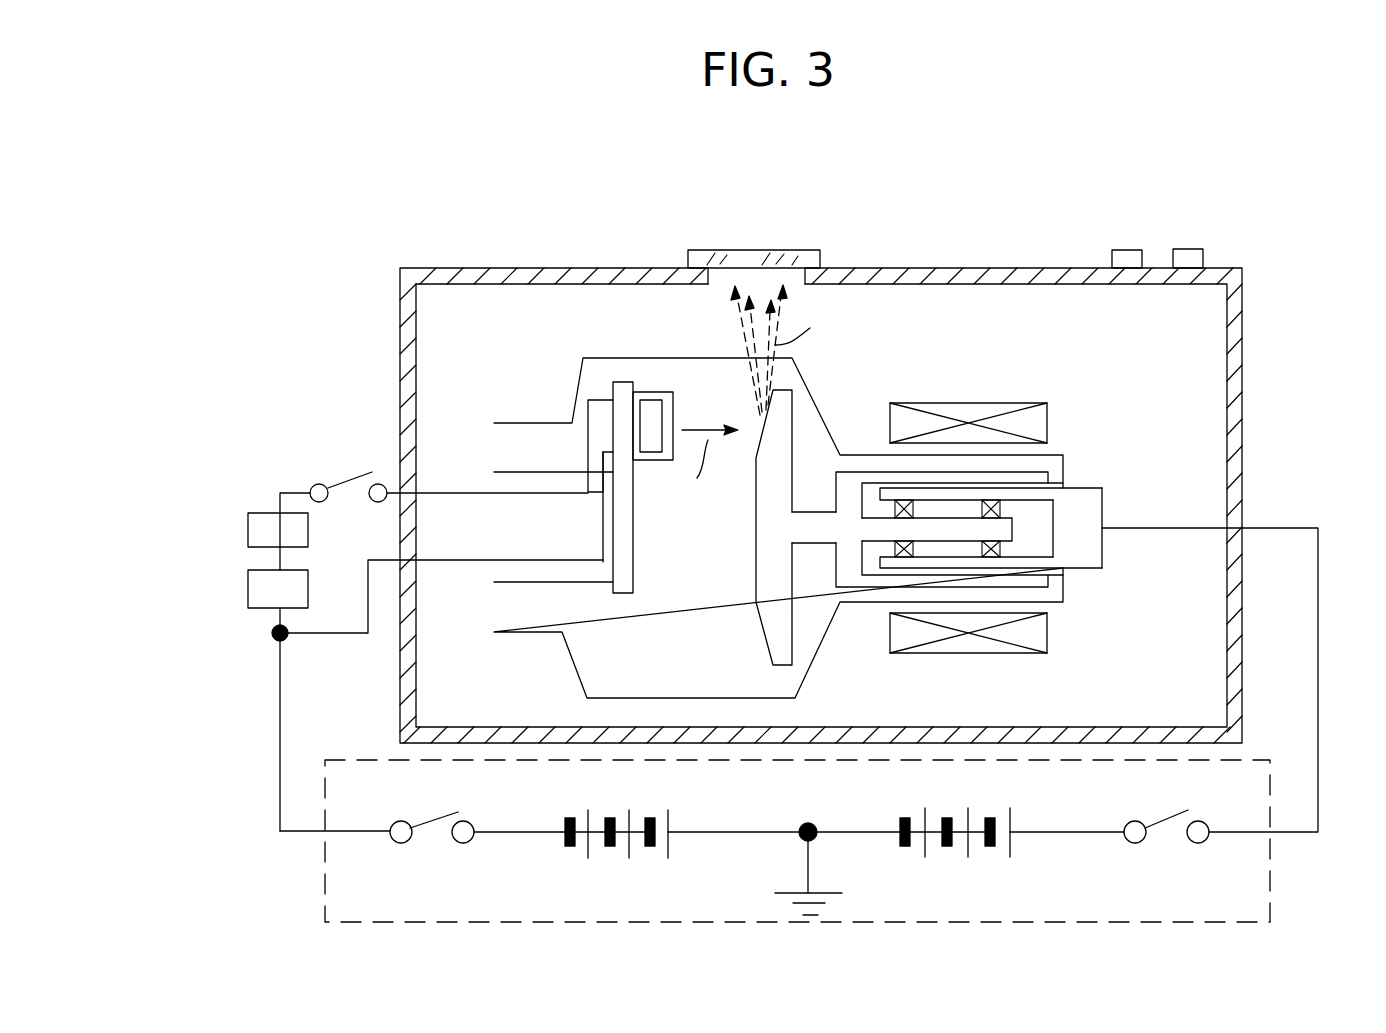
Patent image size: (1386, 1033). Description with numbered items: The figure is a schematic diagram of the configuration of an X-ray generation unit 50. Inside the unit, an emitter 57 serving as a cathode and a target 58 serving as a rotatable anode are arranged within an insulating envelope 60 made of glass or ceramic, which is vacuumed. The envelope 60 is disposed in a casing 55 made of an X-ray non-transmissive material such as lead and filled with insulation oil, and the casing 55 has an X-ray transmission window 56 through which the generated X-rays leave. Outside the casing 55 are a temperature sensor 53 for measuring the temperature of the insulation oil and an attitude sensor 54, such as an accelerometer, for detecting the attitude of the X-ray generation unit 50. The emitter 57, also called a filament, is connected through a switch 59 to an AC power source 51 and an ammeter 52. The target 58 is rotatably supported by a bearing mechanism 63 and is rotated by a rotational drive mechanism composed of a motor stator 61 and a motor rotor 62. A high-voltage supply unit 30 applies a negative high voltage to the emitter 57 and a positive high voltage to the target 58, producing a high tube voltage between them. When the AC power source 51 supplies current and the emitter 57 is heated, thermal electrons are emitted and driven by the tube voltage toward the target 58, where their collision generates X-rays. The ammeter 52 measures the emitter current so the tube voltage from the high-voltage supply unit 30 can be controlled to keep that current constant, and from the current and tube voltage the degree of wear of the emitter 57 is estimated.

The high-voltage supply unit 30 is at (1272, 885).
The X-ray generation unit 50 is at (961, 215).
The AC power source 51 is at (260, 588).
The ammeter 52 is at (258, 530).
The temperature sensor 53 is at (1125, 250).
The attitude sensor 54 is at (1188, 249).
The casing 55 is at (1024, 288).
The X-ray transmission window 56 is at (804, 257).
The emitter 57 is at (652, 410).
The target 58 is at (778, 420).
The switch 59 is at (350, 477).
The envelope 60 is at (575, 392).
The motor stator 61 is at (1050, 414).
The motor rotor 62 is at (1018, 482).
The bearing mechanism 63 is at (1085, 553).